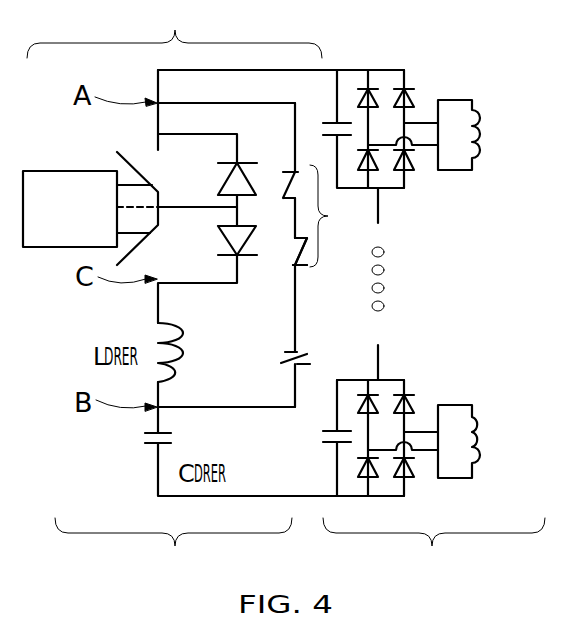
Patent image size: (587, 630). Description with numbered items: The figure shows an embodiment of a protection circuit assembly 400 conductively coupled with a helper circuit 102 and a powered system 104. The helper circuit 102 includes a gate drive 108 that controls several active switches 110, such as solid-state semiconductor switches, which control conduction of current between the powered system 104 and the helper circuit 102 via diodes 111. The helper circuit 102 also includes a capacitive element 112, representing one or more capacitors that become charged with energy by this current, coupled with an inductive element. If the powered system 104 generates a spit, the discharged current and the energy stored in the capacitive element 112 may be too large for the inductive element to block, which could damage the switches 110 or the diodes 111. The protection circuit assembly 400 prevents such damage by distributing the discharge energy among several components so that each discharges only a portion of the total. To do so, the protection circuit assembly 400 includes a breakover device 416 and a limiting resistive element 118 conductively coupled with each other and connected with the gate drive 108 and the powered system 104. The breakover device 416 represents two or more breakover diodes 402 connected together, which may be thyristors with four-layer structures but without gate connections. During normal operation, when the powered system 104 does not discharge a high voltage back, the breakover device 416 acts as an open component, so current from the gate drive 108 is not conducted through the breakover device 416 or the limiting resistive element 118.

The helper circuit 102 is at (174, 30).
The powered system 104 is at (434, 548).
The gate drive 108 is at (47, 170).
The active switch 110 is at (152, 160).
The diode 111 is at (206, 175).
The capacitive element 112 is at (170, 445).
The limiting resistive element 118 is at (299, 357).
The protection circuit assembly 400 is at (173, 548).
The breakover diode 402 is at (298, 267).
The breakover device 416 is at (327, 216).